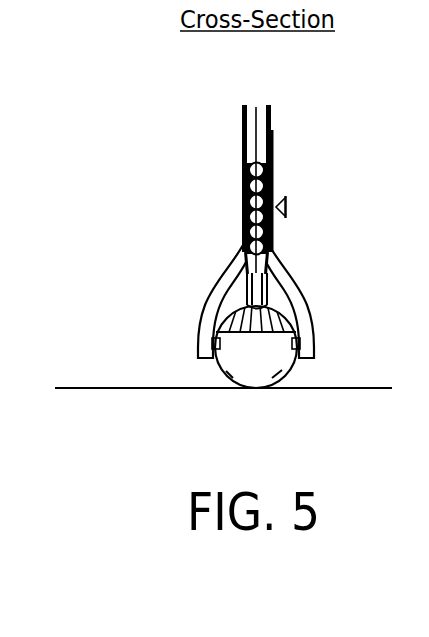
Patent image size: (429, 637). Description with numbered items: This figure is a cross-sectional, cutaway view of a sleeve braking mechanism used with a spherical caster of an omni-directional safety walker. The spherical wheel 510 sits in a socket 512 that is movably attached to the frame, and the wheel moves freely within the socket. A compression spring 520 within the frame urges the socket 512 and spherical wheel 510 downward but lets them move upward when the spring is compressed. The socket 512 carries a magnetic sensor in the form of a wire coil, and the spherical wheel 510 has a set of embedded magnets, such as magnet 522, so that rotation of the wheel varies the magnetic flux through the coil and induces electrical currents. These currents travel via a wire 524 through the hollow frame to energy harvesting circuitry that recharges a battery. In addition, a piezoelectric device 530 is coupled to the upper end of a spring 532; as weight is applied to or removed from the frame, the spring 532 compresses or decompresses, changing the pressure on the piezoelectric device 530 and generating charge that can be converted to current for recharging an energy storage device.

The spherical wheel 510 is at (216, 372).
The socket 512 is at (263, 312).
The compression spring 520 is at (247, 305).
The magnet 522 is at (285, 372).
The wire 524 is at (242, 132).
The piezoelectric device 530 is at (273, 140).
The spring 532 is at (242, 177).